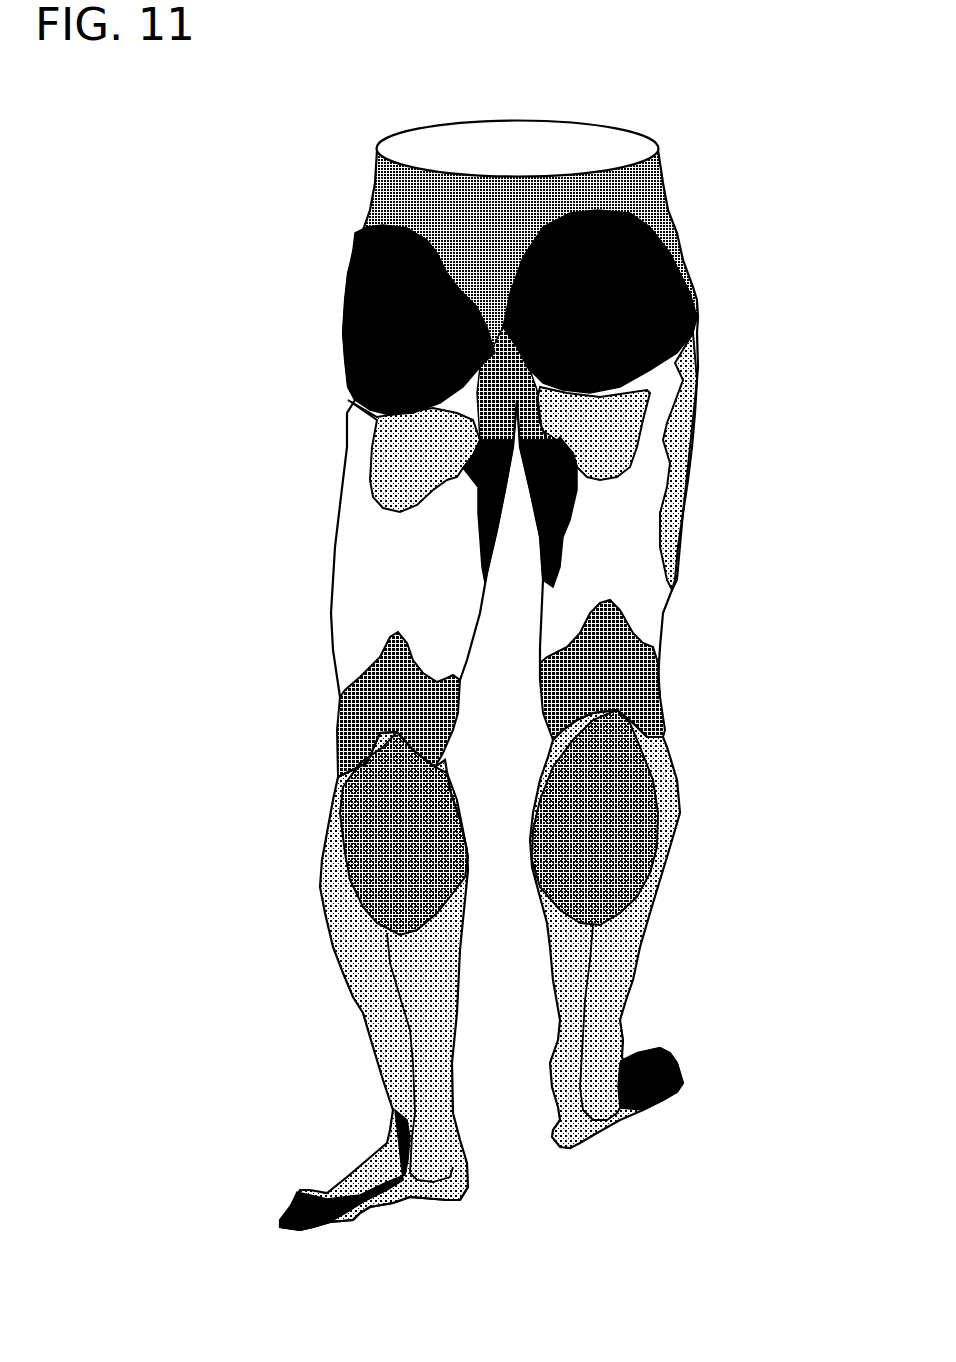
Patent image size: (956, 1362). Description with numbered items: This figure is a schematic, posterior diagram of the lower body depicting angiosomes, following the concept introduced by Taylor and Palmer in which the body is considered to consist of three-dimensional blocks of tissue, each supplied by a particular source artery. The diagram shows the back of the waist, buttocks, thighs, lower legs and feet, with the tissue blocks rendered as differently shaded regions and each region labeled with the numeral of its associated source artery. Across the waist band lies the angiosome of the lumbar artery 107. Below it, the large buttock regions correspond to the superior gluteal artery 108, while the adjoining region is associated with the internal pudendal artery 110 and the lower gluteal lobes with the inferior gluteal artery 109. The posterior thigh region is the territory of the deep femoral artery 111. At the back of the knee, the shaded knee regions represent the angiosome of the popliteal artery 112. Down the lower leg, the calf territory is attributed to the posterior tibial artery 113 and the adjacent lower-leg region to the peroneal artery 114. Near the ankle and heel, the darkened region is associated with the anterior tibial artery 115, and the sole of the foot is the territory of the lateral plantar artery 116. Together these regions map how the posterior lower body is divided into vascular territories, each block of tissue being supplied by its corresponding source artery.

The lumbar artery 107 is at (516, 199).
The superior gluteal artery 108 is at (353, 273).
The internal pudendal artery 110 is at (347, 350).
The inferior gluteal artery 109 is at (410, 463).
The deep femoral artery 111 is at (403, 567).
The popliteal artery 112 is at (367, 720).
The posterior tibial artery 113 is at (453, 950).
The peroneal artery 114 is at (367, 963).
The anterior tibial artery 115 is at (388, 1143).
The lateral plantar artery 116 is at (370, 1207).